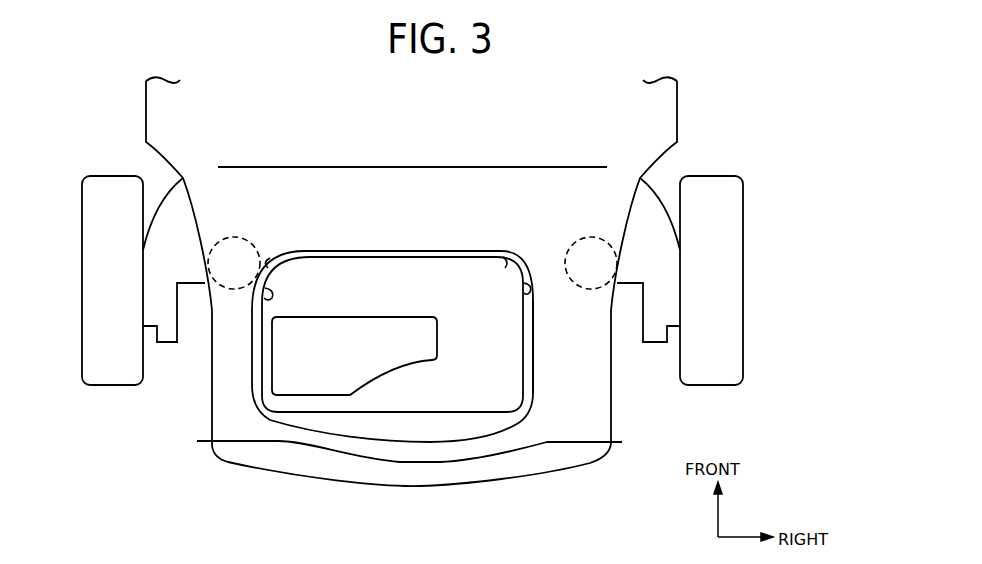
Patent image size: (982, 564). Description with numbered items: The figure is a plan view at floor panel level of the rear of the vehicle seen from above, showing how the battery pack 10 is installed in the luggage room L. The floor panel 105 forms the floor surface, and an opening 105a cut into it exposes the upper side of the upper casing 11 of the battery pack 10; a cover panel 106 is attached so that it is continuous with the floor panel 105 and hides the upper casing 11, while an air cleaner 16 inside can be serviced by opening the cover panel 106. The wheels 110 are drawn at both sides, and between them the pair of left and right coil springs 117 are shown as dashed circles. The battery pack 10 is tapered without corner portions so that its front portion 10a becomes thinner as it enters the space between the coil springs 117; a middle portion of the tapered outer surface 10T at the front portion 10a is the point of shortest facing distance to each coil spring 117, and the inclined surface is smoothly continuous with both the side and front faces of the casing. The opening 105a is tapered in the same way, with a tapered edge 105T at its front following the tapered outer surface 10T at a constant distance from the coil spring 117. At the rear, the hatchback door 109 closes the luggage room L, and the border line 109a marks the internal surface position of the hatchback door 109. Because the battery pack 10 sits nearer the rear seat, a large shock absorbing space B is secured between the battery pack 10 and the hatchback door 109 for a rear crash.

The battery pack 10 is at (473, 298).
The front portion 10a is at (393, 268).
The tapered outer surface 10T is at (272, 262).
The upper casing 11 is at (533, 402).
The air cleaner 16 is at (320, 334).
The floor panel 105 is at (223, 408).
The opening 105a is at (470, 425).
The tapered edge 105T is at (272, 292).
The cover panel 106 is at (533, 370).
The hatchback door 109 is at (427, 475).
The border line 109a is at (570, 443).
The wheels 110 is at (727, 223).
The coil springs 117 is at (234, 250).
The luggage room L is at (458, 197).
The shock absorbing space B is at (373, 452).